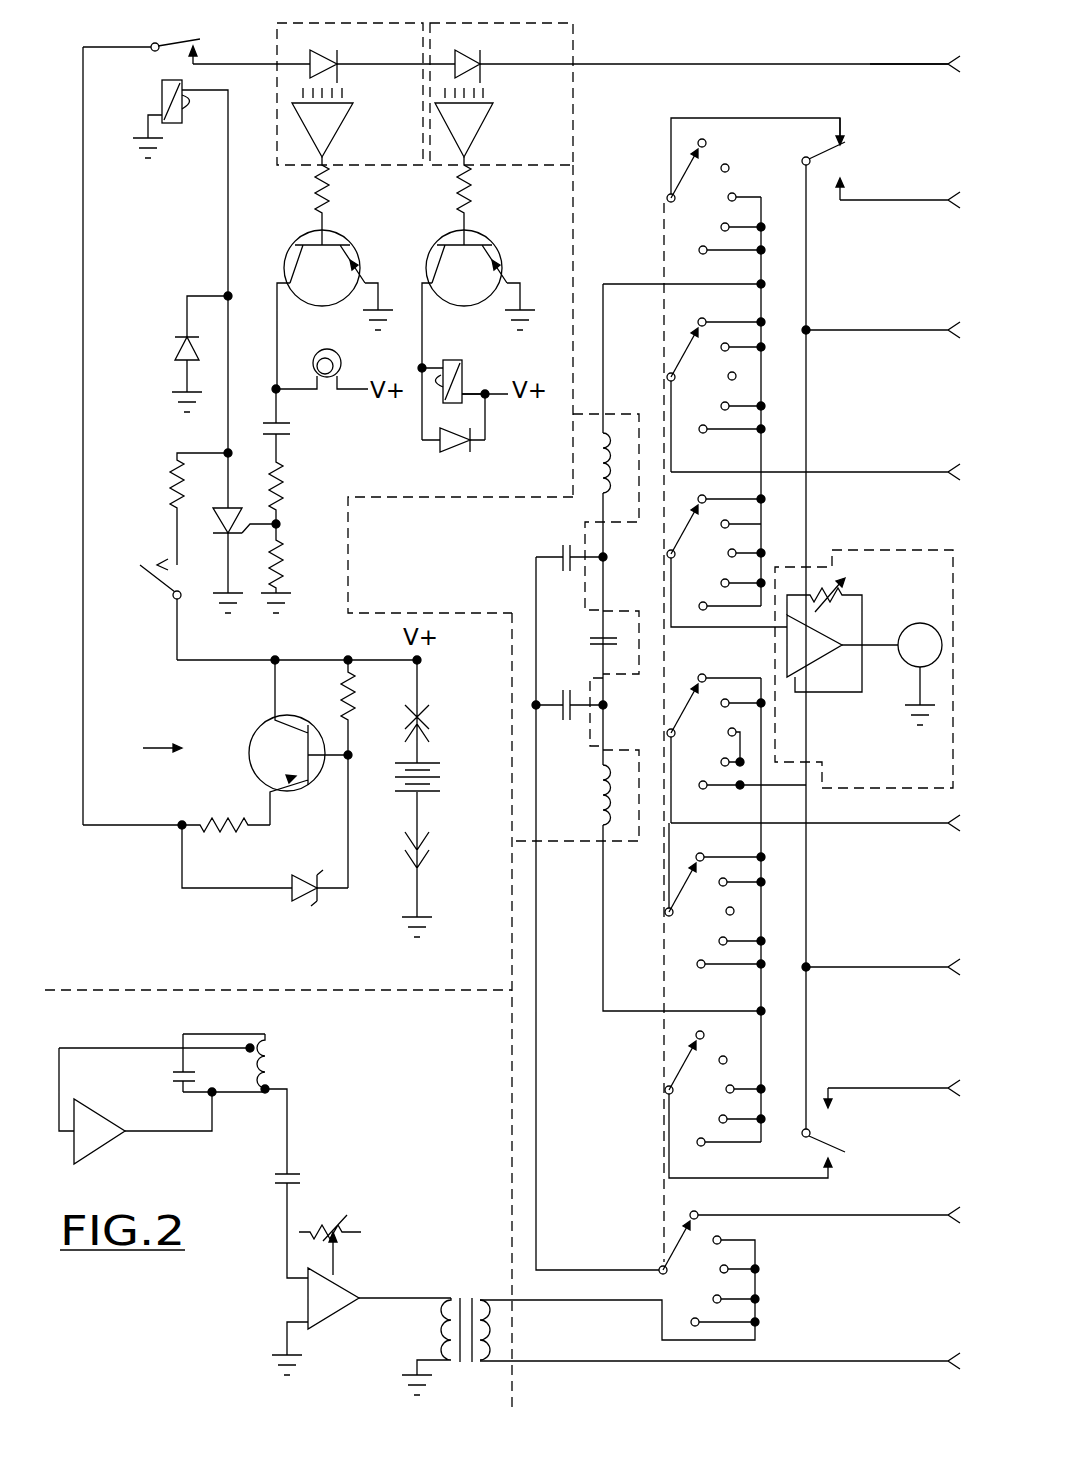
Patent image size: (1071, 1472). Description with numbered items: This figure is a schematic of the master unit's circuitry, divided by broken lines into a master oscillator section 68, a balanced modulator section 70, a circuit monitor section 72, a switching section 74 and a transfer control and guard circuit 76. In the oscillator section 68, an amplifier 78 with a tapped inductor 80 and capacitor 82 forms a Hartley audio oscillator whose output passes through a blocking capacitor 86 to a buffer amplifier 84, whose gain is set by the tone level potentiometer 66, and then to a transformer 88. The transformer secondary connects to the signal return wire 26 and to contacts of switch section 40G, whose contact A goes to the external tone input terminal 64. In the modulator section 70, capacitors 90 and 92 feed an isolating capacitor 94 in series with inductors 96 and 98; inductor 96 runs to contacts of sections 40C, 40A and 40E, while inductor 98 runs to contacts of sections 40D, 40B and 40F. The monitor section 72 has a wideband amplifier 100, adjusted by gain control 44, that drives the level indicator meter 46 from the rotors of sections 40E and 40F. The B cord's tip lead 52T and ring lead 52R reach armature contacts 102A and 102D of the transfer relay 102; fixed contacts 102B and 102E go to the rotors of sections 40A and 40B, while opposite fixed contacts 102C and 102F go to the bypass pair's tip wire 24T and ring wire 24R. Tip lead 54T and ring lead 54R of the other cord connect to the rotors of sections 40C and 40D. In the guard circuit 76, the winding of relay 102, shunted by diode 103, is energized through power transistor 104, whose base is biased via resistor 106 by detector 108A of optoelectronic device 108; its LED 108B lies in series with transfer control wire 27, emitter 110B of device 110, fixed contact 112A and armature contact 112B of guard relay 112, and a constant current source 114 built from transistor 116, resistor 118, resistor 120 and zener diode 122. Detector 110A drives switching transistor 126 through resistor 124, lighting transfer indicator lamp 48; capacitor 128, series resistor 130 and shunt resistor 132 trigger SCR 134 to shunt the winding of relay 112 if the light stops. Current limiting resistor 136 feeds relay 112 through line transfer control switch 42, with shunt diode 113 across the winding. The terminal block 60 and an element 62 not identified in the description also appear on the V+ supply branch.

The transfer control wire 27 is at (946, 66).
The switching section 74 is at (740, 57).
The armature contact 112B is at (174, 40).
The fixed contact 112A is at (196, 58).
The guard relay 112 is at (162, 105).
The emitter portion 110B is at (325, 51).
The light emitting diode 108B is at (469, 54).
The detector portion 110A is at (343, 122).
The optoelectronic device 110 is at (396, 161).
The optoelectronic transistor detector 108A is at (482, 122).
The optoelectronic device 108 is at (540, 161).
The resistor 124 is at (323, 200).
The biasing resistor 106 is at (465, 200).
The switching transistor 126 is at (285, 262).
The NPN power switching transistor 104 is at (503, 250).
The shunt diode 113 is at (176, 344).
The transfer indicator lamp 48 is at (378, 360).
The transfer relay 102 is at (467, 368).
The capacitor 128 is at (281, 420).
The shunt diode 103 is at (463, 455).
The series resistor 130 is at (286, 496).
The current limiting resistor 136 is at (170, 487).
The silicon controlled rectifier 134 is at (214, 518).
The shunt resistor 132 is at (280, 544).
The line transfer control switch 42 is at (153, 580).
The inductor 96 is at (600, 491).
The capacitor 90 is at (574, 576).
The isolating capacitor 94 is at (588, 646).
The capacitor 92 is at (574, 722).
The inductor 98 is at (598, 799).
The balanced modulator section 70 is at (440, 597).
The terminal block 60 is at (433, 700).
The battery 62 is at (433, 762).
The transistor 116 is at (261, 724).
The resistor 120 is at (342, 700).
The constant current source 114 is at (141, 749).
The current limiting resistor 118 is at (222, 822).
The zener diode 122 is at (290, 880).
The transfer control and guard circuit 76 is at (200, 921).
The master oscillator section 68 is at (155, 1026).
The capacitor 82 is at (169, 1078).
The tapped inductor 80 is at (324, 1068).
The amplifier 78 is at (109, 1144).
The blocking capacitor 86 is at (278, 1172).
The tone level potentiometer 66 is at (337, 1217).
The controlled gain buffer amplifier 84 is at (347, 1286).
The impedance matching and isolating transformer 88 is at (462, 1300).
The switch section 40A is at (726, 191).
The switch section 40B is at (718, 1098).
The switch section 40C is at (688, 388).
The switch section 40D is at (686, 900).
The switch section 40E is at (698, 554).
The switch section 40F is at (707, 742).
The switch section 40G is at (619, 1269).
The armature contact 102A is at (845, 162).
The fixed contact 102B is at (841, 138).
The fixed contact 102C is at (843, 188).
The armature contact 102D is at (835, 1138).
The fixed contact 102E is at (841, 1168).
The fixed contact 102F is at (841, 1103).
The tip wire 24T is at (893, 201).
The tip lead 52T is at (896, 334).
The tip lead 54T is at (898, 474).
The ring lead 54R is at (878, 822).
The ring lead 52R is at (878, 966).
The ring wire 24R is at (878, 1088).
The gain control 44 is at (848, 580).
The circuit level indicator meter 46 is at (918, 624).
The amplifier 100 is at (810, 660).
The circuit monitor section 72 is at (880, 727).
The external tone input terminal 64 is at (893, 1214).
The signal return wire 26 is at (888, 1361).